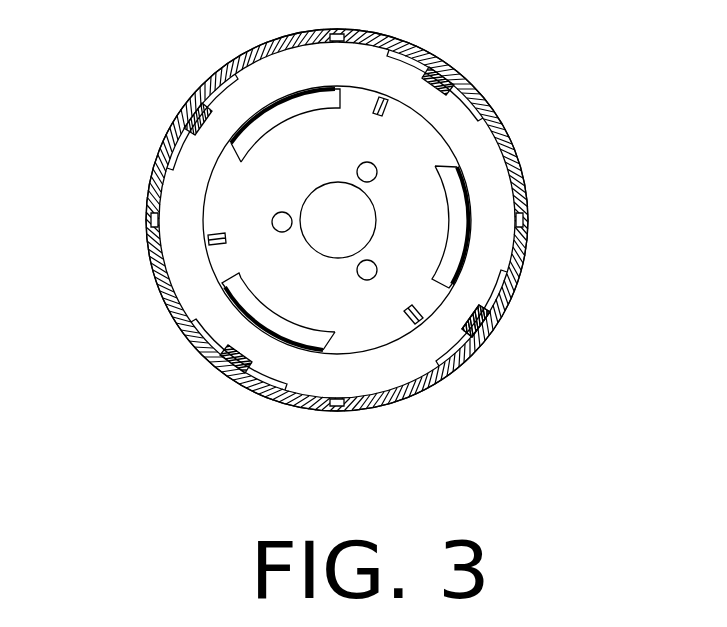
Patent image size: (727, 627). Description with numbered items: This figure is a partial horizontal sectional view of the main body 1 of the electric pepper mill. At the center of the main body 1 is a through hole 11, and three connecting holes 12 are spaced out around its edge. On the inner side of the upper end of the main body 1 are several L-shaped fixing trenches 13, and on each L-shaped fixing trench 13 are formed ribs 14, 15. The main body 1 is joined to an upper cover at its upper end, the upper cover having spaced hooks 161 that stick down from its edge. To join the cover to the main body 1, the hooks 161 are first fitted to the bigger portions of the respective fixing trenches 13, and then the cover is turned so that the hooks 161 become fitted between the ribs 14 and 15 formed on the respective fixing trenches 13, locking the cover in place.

The main body 1 is at (147, 255).
The through hole 11 is at (362, 212).
The connecting holes 12 is at (250, 128).
The L-shaped fixing trenches 13 is at (463, 362).
The rib 14 is at (258, 388).
The rib 15 is at (207, 357).
The hooks 161 is at (474, 316).